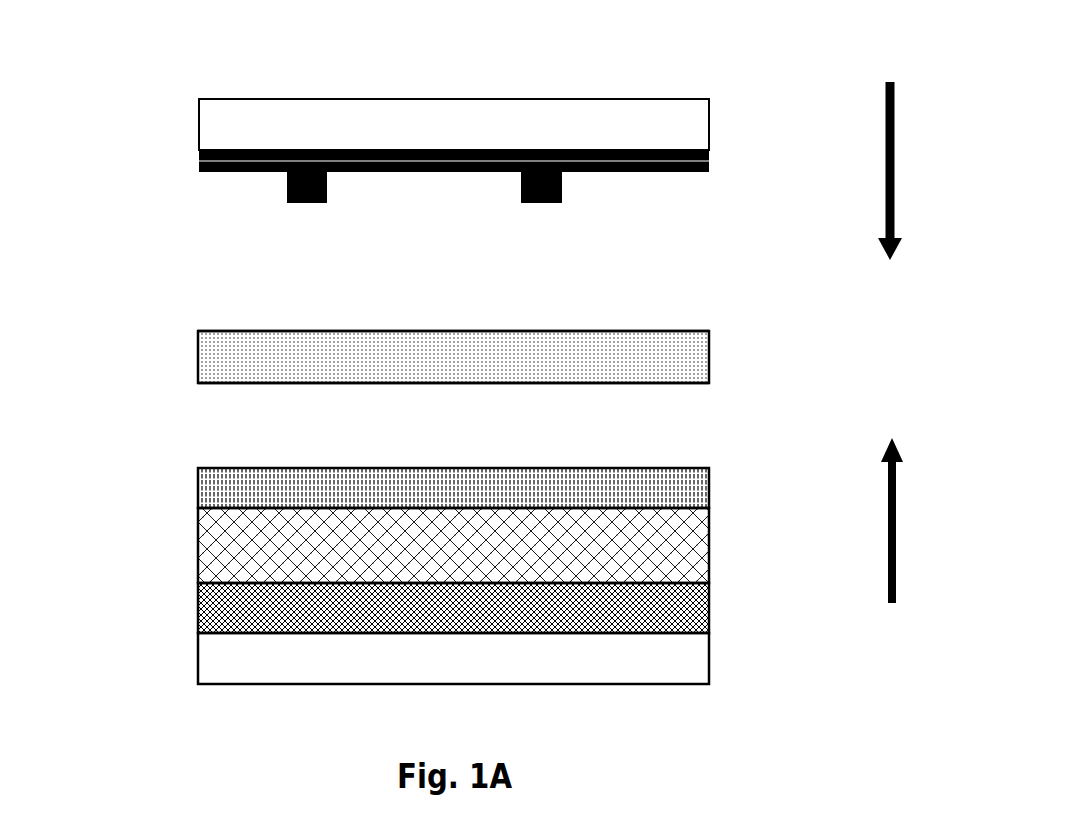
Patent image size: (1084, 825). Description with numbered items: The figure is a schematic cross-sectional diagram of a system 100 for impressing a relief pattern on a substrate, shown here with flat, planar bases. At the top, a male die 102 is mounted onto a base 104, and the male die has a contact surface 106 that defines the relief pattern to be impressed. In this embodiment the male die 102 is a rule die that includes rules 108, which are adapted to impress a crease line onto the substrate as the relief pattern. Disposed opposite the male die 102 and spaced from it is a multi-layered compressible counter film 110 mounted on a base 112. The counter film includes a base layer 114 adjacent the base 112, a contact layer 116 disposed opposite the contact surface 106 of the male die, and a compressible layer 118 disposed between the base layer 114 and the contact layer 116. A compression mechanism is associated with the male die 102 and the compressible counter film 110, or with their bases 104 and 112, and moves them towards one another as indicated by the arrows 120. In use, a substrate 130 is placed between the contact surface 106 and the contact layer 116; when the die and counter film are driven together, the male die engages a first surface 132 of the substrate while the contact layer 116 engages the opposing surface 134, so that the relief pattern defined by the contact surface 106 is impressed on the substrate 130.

The system 100 is at (300, 78).
The male die 102 is at (199, 161).
The base 104 is at (224, 128).
The contact surface 106 is at (588, 202).
The rules 108 is at (325, 203).
The multi-layered compressible counter film 110 is at (438, 570).
The base 112 is at (237, 668).
The base layer 114 is at (227, 597).
The contact layer 116 is at (222, 488).
The compressible layer 118 is at (227, 545).
The arrows 120 is at (919, 342).
The substrate 130 is at (622, 312).
The first surface 132 is at (252, 332).
The opposing surface 134 is at (250, 384).